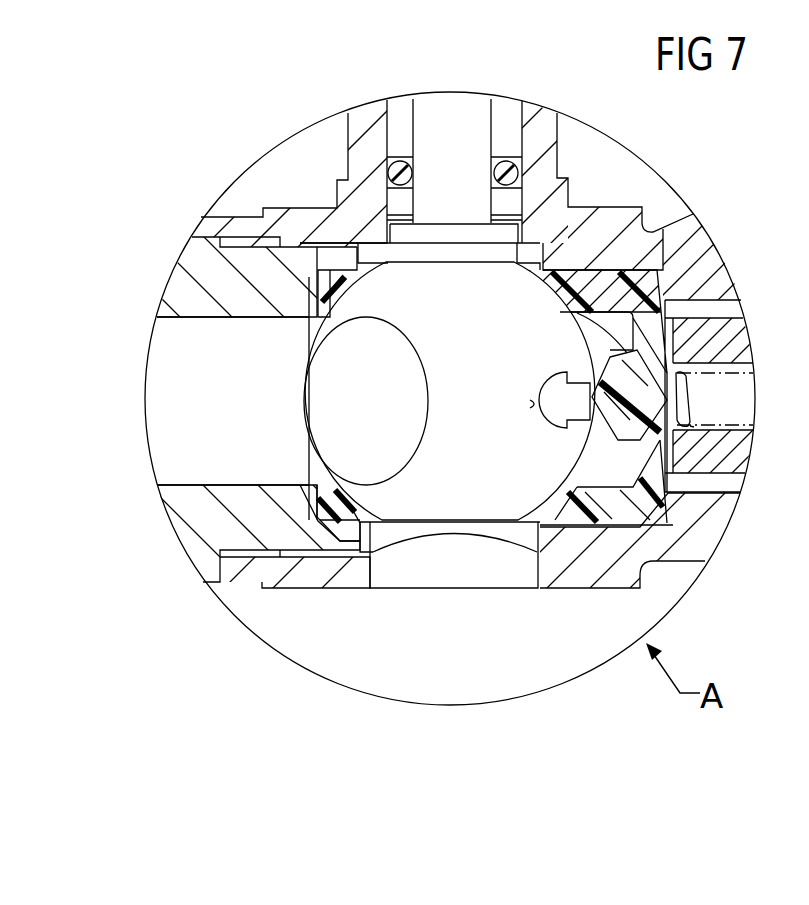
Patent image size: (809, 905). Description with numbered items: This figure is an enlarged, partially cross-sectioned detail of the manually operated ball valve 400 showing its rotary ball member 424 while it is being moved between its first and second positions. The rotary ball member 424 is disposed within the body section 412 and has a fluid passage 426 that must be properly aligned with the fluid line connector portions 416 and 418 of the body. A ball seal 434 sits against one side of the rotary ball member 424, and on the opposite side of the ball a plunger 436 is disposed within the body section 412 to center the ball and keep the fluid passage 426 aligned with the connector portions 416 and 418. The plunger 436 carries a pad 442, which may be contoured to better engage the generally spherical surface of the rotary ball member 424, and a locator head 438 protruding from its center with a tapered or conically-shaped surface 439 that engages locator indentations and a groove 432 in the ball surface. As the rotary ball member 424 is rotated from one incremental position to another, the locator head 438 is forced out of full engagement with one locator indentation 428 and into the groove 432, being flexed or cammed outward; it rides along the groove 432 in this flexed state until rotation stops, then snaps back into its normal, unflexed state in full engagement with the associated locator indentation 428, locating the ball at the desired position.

The manually operated ball valve 400 is at (286, 120).
The body section 412 is at (700, 520).
The fluid line connector portion 416 is at (528, 577).
The fluid line connector portion 418 is at (188, 318).
The rotary ball member 424 is at (333, 320).
The fluid passage 426 is at (388, 390).
The locator indentation 428 is at (528, 404).
The groove 432 is at (588, 383).
The ball seal 434 is at (315, 512).
The plunger 436 is at (645, 287).
The locator head 438 is at (583, 320).
The tapered or conically-shaped surface 439 is at (605, 437).
The pad 442 is at (563, 515).